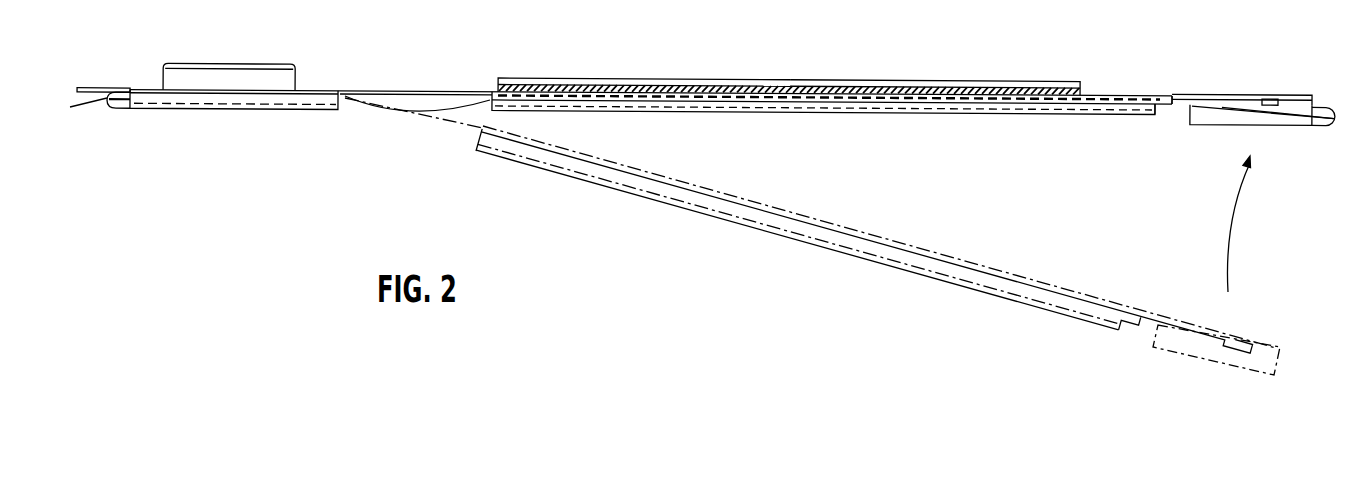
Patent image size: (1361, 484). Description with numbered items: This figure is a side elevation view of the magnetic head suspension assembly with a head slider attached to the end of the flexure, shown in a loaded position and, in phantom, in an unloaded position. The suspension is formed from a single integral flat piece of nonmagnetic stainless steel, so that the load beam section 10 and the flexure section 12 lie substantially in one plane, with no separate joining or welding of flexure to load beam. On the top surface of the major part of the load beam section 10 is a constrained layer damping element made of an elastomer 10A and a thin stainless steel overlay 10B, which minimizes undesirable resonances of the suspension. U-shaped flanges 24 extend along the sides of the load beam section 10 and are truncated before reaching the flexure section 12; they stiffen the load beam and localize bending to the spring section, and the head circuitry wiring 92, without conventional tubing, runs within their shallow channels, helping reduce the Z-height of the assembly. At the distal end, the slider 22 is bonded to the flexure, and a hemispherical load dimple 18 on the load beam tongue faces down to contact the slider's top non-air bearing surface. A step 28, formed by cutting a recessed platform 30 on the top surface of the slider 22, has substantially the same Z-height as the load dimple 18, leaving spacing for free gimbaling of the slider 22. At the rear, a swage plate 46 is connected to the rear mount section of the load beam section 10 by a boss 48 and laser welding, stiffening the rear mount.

The load beam section 10 is at (727, 76).
The elastomer 10A is at (918, 88).
The overlay 10B is at (992, 85).
The flexure section 12 is at (1213, 86).
The load dimple 18 is at (1264, 99).
The slider 22 is at (1290, 122).
The U-shaped flanges 24 is at (857, 113).
The step 28 is at (1314, 100).
The recessed portion or platform 30 is at (1258, 106).
The swage plate 46 is at (268, 110).
The boss 48 is at (253, 63).
The head circuitry wiring 92 is at (366, 108).